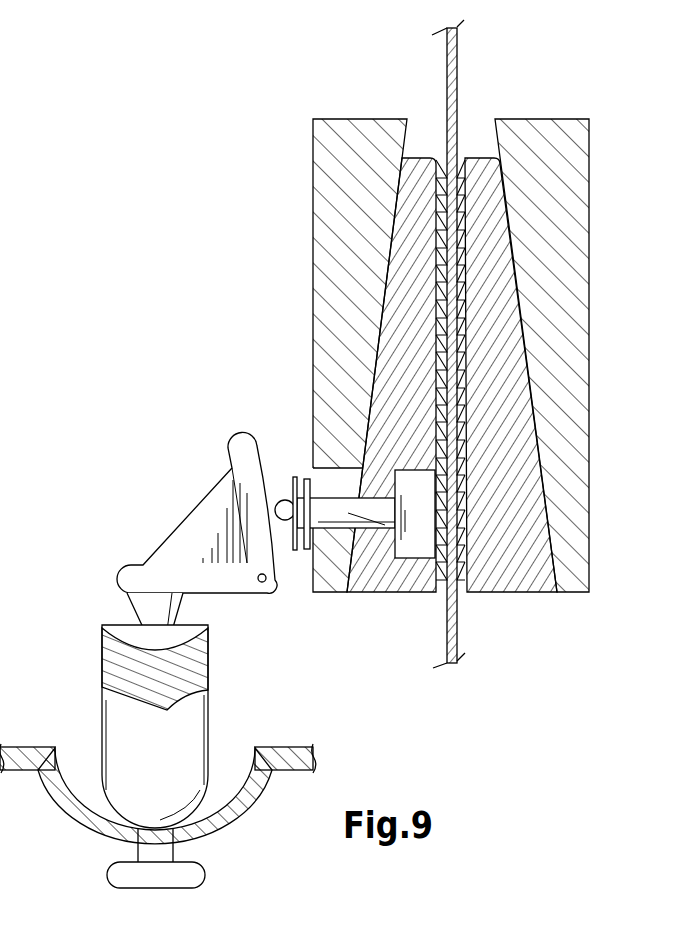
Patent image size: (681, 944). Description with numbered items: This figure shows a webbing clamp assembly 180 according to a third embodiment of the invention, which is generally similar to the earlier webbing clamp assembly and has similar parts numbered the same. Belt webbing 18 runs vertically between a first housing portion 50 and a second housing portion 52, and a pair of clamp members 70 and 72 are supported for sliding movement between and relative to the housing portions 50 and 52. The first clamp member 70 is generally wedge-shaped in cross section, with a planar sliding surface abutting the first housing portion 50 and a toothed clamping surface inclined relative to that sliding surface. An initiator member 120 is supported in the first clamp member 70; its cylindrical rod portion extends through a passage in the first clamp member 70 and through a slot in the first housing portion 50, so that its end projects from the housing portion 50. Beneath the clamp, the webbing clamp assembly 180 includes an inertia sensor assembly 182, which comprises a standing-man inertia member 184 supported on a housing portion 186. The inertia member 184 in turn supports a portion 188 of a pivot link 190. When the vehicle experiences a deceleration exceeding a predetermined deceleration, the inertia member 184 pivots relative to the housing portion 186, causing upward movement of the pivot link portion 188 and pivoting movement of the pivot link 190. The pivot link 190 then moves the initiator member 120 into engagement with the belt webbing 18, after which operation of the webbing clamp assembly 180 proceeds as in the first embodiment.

The belt webbing 18 is at (460, 90).
The first housing portion 50 is at (333, 177).
The second housing portion 52 is at (547, 187).
The first clamp member 70 is at (405, 310).
The second clamp member 72 is at (490, 275).
The initiator member 120 is at (350, 520).
The webbing clamp assembly 180 is at (200, 371).
The inertia sensor assembly 182 is at (390, 759).
The standing-man inertia member 184 is at (207, 728).
The housing portion 186 is at (243, 817).
The pivot link portion 188 is at (187, 608).
The pivot link 190 is at (160, 525).